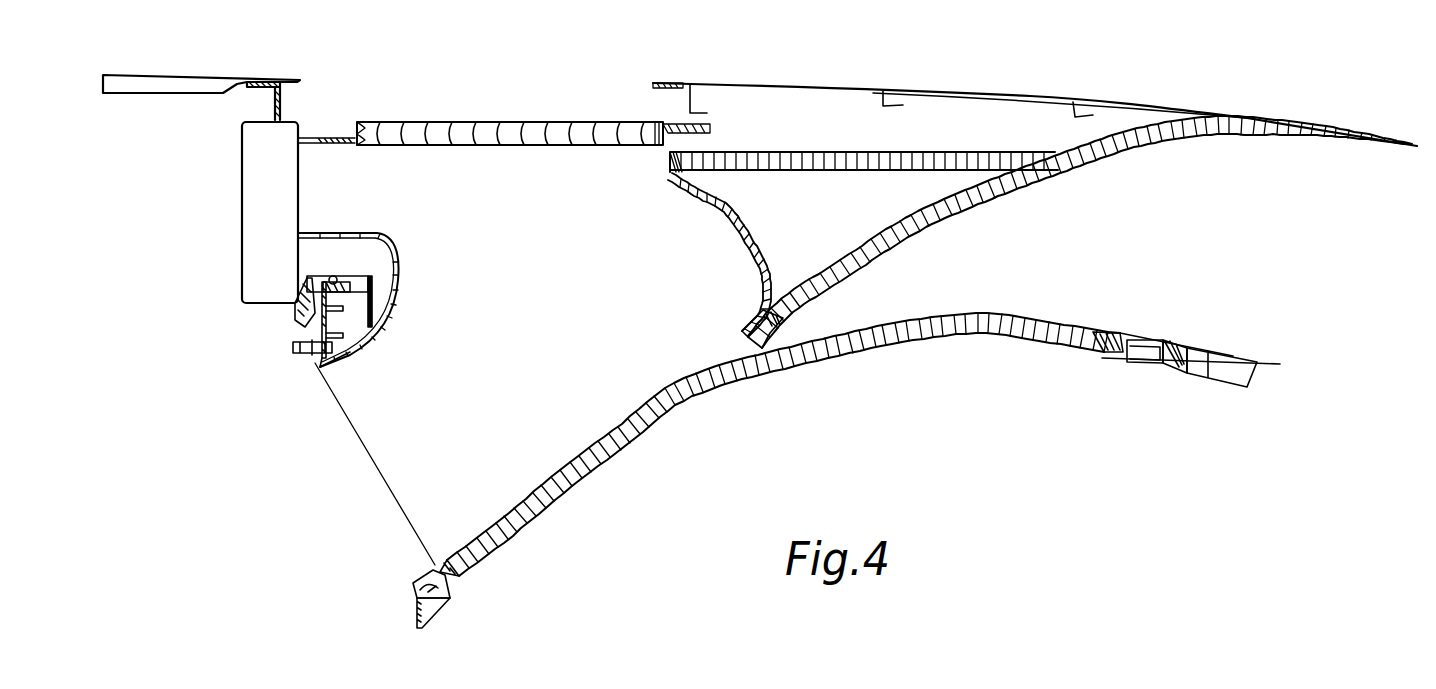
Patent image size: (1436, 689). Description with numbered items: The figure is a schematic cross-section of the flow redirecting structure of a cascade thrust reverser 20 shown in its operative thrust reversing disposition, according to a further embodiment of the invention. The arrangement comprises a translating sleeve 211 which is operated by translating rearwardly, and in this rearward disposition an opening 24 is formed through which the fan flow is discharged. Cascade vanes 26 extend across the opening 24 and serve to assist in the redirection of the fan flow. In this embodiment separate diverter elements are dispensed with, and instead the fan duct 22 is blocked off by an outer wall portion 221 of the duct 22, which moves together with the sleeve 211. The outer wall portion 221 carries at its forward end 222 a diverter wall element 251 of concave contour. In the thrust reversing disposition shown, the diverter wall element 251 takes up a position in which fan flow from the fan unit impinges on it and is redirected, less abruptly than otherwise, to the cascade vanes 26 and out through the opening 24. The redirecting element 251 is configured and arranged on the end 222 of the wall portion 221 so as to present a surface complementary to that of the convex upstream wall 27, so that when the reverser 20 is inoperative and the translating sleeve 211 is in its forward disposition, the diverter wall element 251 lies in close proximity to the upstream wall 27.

The cascade thrust reverser 20 is at (660, 39).
The fan duct 22 is at (1205, 189).
The opening 24 is at (463, 89).
The cascade vanes 26 is at (522, 147).
The convex upstream wall 27 is at (398, 282).
The translating sleeve 211 is at (988, 114).
The outer wall portion 221 is at (936, 210).
The end 222 is at (746, 329).
The diverter wall element 251 is at (730, 214).